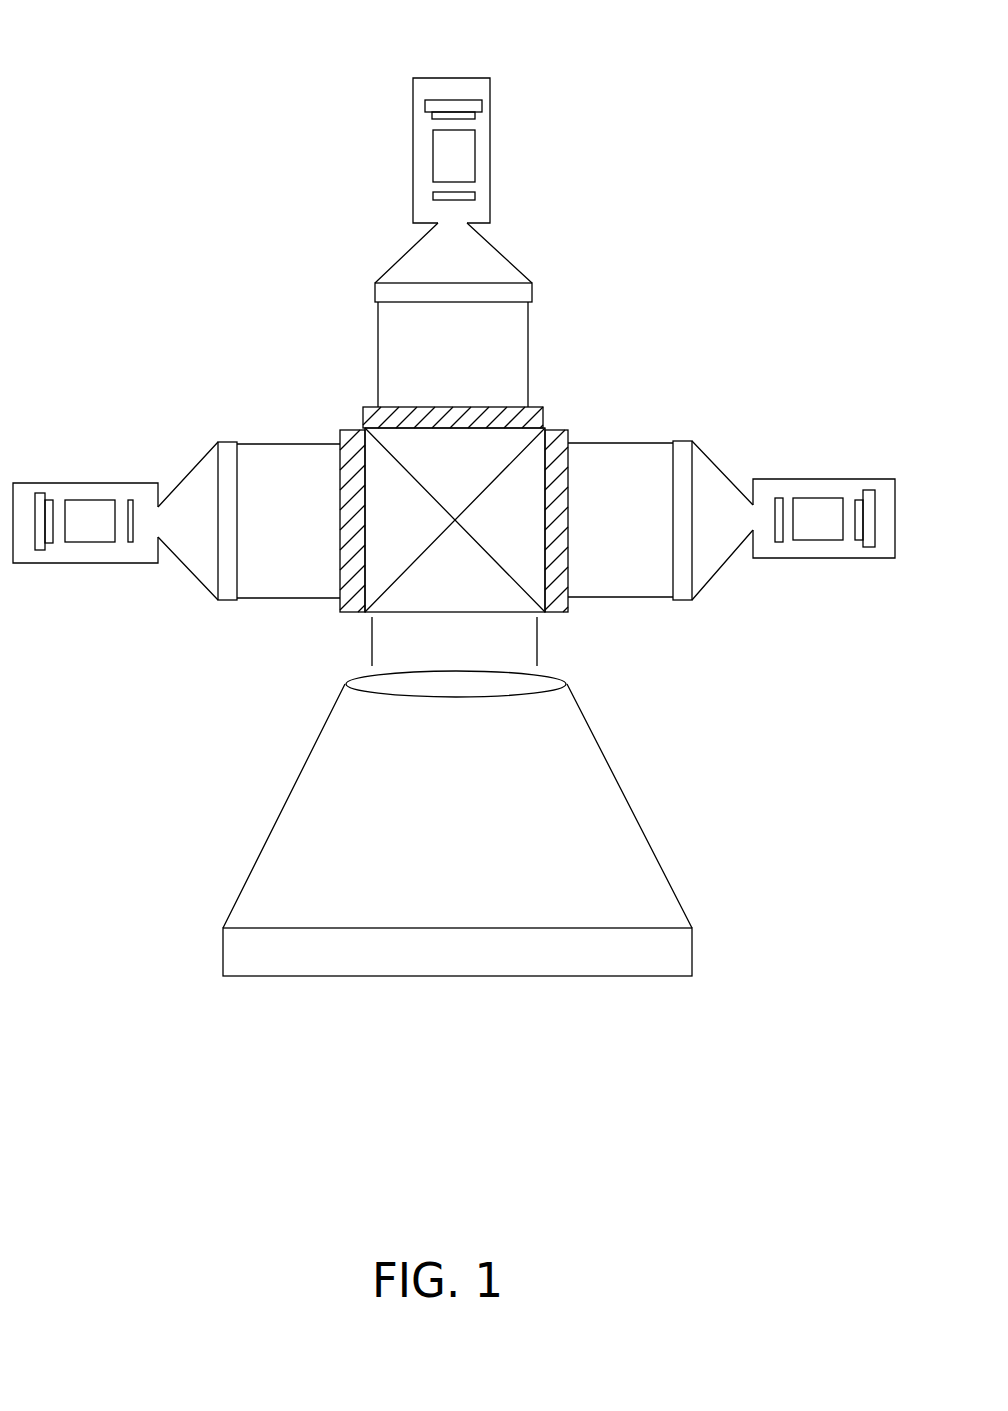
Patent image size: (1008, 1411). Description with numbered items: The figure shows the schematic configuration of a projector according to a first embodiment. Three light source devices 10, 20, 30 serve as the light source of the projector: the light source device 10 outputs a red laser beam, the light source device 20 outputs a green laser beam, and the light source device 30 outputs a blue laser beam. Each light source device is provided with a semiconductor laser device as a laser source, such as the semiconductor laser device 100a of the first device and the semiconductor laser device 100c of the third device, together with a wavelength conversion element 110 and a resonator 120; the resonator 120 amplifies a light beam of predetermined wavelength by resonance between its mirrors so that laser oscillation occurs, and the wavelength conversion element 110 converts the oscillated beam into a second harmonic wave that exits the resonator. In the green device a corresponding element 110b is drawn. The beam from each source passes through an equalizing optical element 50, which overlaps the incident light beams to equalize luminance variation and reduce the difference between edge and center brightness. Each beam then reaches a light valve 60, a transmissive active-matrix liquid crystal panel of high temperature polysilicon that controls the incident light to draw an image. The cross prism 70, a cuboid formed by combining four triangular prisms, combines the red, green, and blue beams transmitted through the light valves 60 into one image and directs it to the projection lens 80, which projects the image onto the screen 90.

The light source device 10 is at (820, 479).
The light source device 20 is at (460, 78).
The light source device 30 is at (93, 483).
The equalizing optical element 50 is at (532, 292).
The light valve 60 is at (352, 428).
The cross prism 70 is at (422, 612).
The projection lens 80 is at (567, 684).
The screen 90 is at (692, 950).
The semiconductor laser device 100a is at (868, 547).
The semiconductor laser device 100c is at (38, 550).
The wavelength conversion element 110 is at (475, 155).
The lens (green module) 110b is at (482, 106).
The resonator 120 is at (475, 195).